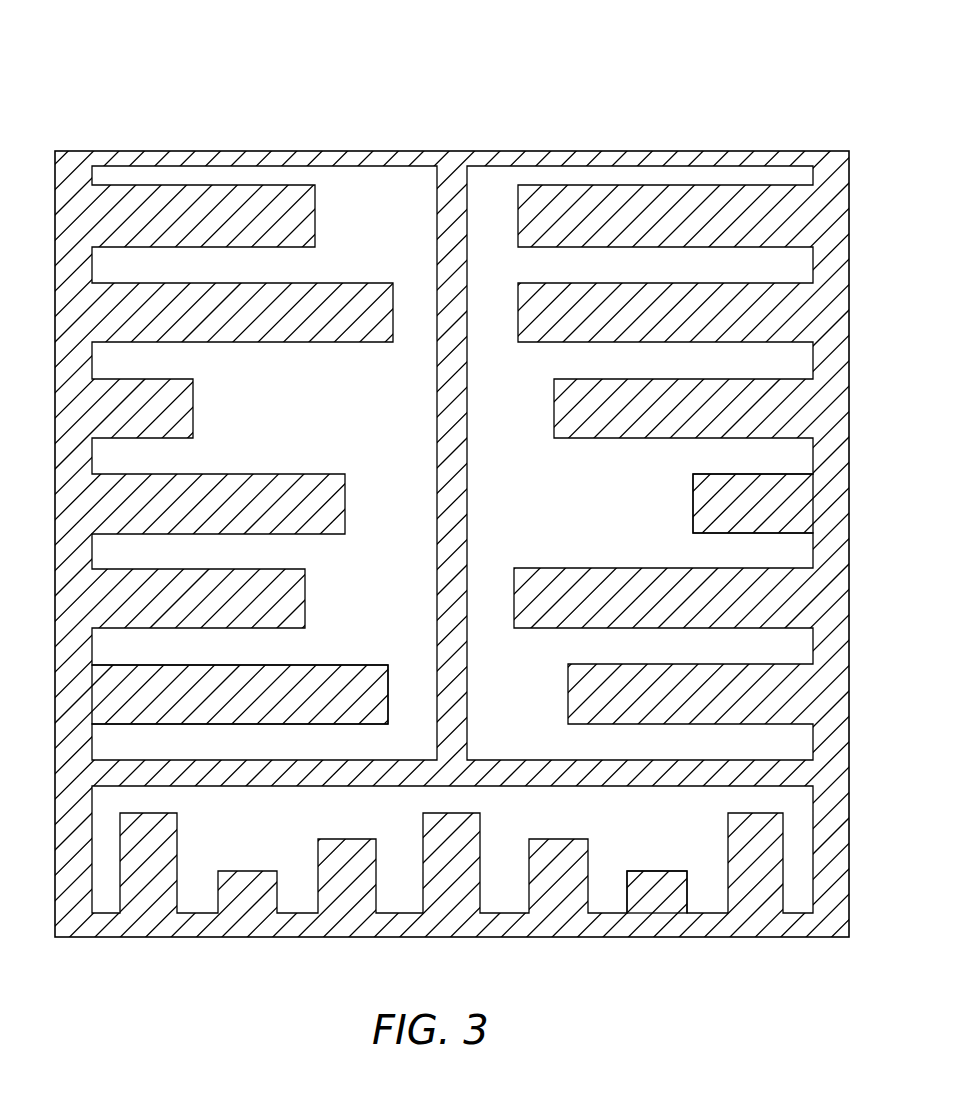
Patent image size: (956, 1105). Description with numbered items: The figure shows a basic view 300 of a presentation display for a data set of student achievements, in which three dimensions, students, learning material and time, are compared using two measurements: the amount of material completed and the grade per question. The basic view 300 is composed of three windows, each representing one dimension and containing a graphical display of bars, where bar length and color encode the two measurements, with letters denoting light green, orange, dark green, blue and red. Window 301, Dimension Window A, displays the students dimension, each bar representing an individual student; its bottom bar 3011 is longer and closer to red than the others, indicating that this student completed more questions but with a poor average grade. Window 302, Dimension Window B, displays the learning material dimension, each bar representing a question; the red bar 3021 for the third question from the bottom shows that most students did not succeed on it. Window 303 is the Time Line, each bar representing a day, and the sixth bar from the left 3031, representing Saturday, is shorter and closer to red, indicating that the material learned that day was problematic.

The basic view 300 is at (134, 120).
The Dimension Window A 301 is at (264, 437).
The Dimension Window B 302 is at (640, 437).
The Time Line window 303 is at (455, 881).
The bar 3011 is at (240, 694).
The bar 3021 is at (753, 503).
The bar 3031 is at (657, 905).